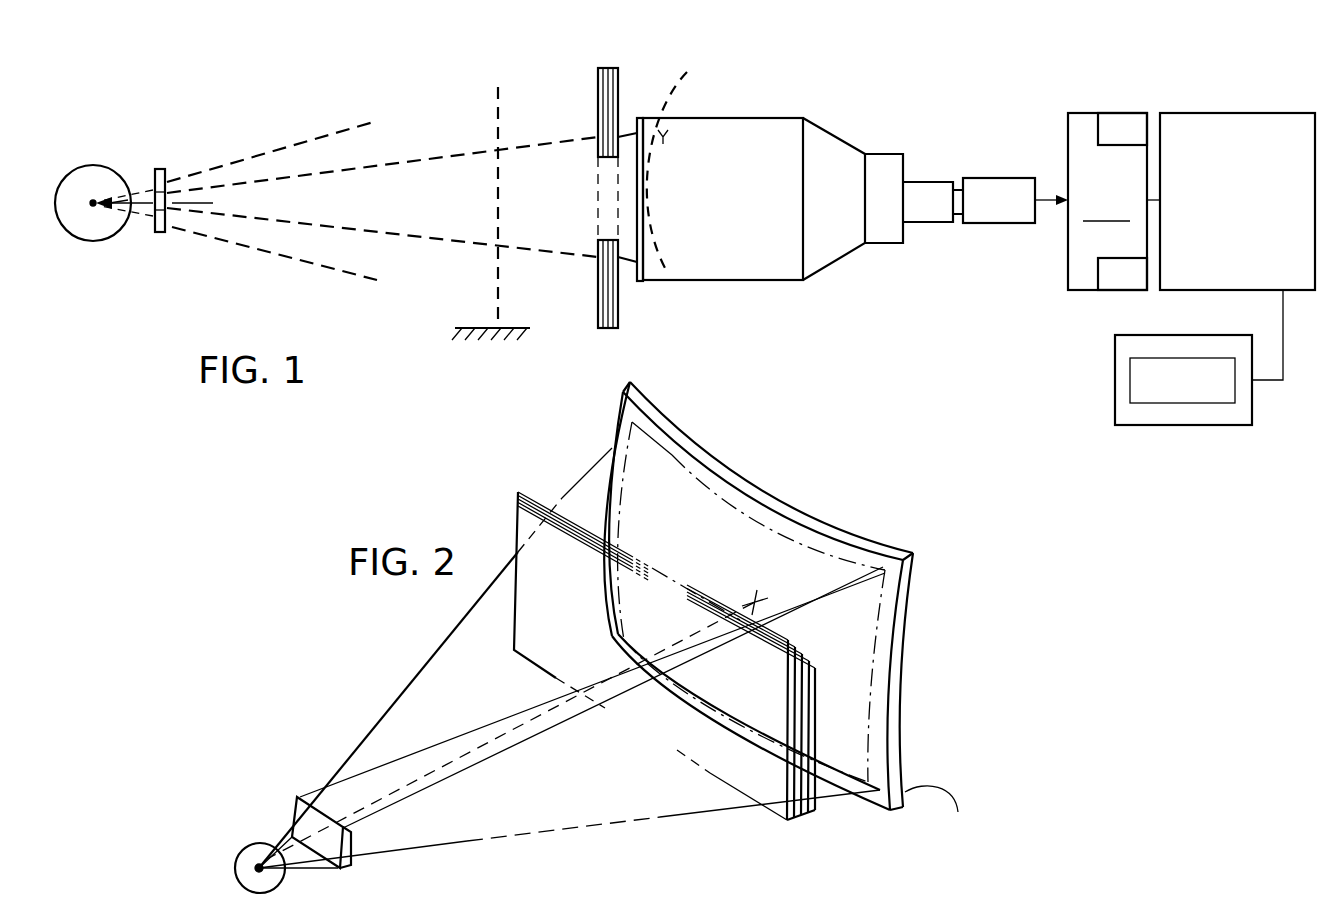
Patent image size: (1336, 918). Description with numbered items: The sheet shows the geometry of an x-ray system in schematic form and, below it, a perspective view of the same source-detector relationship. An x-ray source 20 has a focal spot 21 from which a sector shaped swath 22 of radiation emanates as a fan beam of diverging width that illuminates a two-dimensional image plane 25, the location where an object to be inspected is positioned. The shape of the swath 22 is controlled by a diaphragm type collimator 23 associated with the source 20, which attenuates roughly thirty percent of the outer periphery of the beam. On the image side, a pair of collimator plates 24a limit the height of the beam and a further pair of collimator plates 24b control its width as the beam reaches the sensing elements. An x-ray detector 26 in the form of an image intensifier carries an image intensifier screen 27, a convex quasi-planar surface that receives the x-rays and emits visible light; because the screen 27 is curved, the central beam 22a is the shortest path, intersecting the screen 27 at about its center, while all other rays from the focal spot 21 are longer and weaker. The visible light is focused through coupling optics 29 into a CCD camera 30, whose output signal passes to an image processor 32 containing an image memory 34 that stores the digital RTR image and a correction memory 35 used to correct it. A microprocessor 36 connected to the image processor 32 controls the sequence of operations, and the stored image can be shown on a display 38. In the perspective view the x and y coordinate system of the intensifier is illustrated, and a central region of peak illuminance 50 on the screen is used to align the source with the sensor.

In FIG. 1, the x-ray source 20 is at (92, 241).
In FIG. 1, the focal spot 21 is at (92, 203).
In FIG. 2, the focal spot 21 is at (245, 858).
In FIG. 1, the sector shaped swath of radiation 22 is at (258, 145).
In FIG. 2, the central beam 22a is at (483, 740).
In FIG. 1, the diaphragm type collimator 23 is at (164, 165).
In FIG. 2, the diaphragm type collimator 23 is at (300, 800).
In FIG. 1, the collimator plates 24a is at (625, 93).
In FIG. 2, the collimator plates 24a is at (718, 778).
In FIG. 1, the collimator plates 24b is at (598, 218).
In FIG. 2, the collimator plates 24b is at (512, 491).
In FIG. 1, the image plane 25 is at (497, 109).
In FIG. 1, the x-ray detector 26 is at (762, 118).
In FIG. 1, the image intensifier screen 27 is at (680, 78).
In FIG. 2, the image intensifier screen 27 is at (819, 514).
In FIG. 1, the coupling optics 29 is at (935, 182).
In FIG. 1, the CCD camera 30 is at (1003, 224).
In FIG. 1, the image processor 32 is at (1080, 113).
In FIG. 1, the image memory 34 is at (1121, 290).
In FIG. 1, the correction memory 35 is at (1122, 113).
In FIG. 1, the microprocessor 36 is at (1279, 113).
In FIG. 1, the display 38 is at (1132, 426).
In FIG. 2, the central region of peak illuminance 50 is at (748, 598).